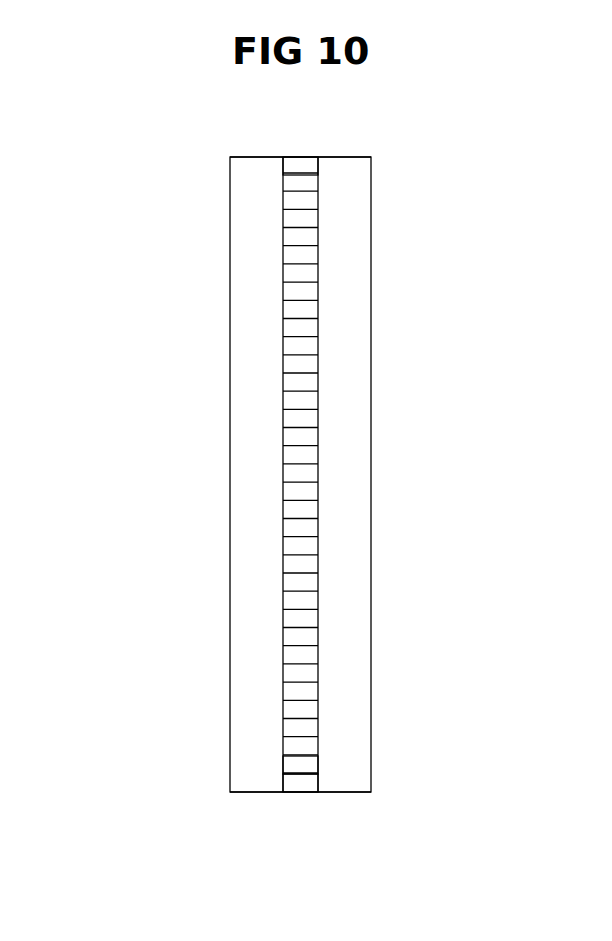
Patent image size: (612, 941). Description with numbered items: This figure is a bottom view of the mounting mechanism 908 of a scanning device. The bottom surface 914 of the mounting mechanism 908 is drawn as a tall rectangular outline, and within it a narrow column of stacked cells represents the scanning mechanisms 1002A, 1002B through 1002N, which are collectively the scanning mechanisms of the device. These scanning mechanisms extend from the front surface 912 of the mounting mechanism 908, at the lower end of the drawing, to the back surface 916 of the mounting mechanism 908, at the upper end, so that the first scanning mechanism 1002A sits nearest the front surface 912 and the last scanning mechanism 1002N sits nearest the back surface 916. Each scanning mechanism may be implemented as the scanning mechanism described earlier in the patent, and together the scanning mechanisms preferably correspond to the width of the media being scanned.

The mounting mechanism 908 is at (156, 161).
The front surface 912 is at (268, 793).
The bottom surface 914 is at (247, 263).
The back surface 916 is at (252, 157).
The scanning mechanism 1002N is at (310, 168).
The scanning mechanism 1002B is at (287, 770).
The scanning mechanism 1002A is at (310, 779).